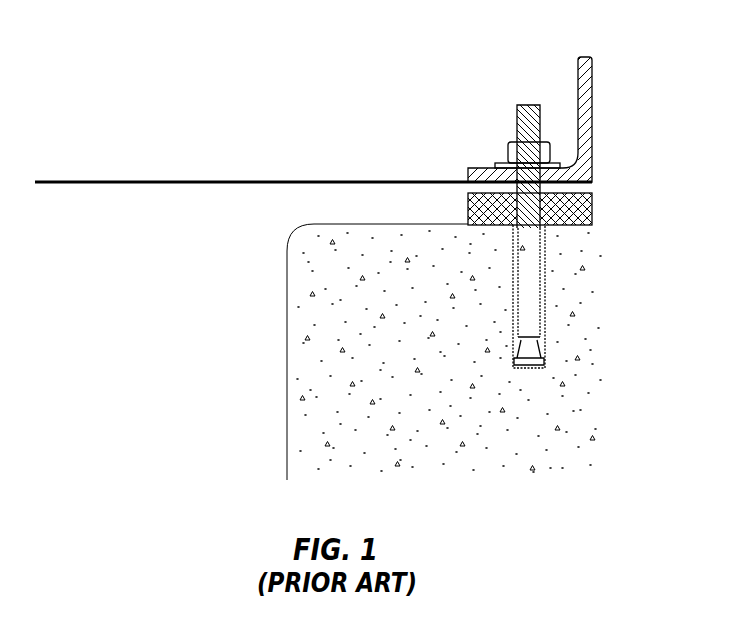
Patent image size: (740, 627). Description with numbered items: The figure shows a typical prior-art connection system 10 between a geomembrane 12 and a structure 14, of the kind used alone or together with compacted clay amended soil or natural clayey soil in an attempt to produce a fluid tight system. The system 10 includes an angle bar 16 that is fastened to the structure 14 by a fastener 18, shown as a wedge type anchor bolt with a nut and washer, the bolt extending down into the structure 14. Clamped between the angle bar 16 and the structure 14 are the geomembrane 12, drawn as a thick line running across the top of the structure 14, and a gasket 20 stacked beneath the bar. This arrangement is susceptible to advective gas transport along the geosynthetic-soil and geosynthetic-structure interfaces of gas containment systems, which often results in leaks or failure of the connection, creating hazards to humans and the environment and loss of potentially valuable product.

The connection system 10 is at (488, 70).
The geomembrane 12 is at (276, 181).
The structure 14 is at (303, 283).
The angle bar 16 is at (592, 96).
The fastener 18 is at (518, 124).
The gasket 20 is at (592, 208).